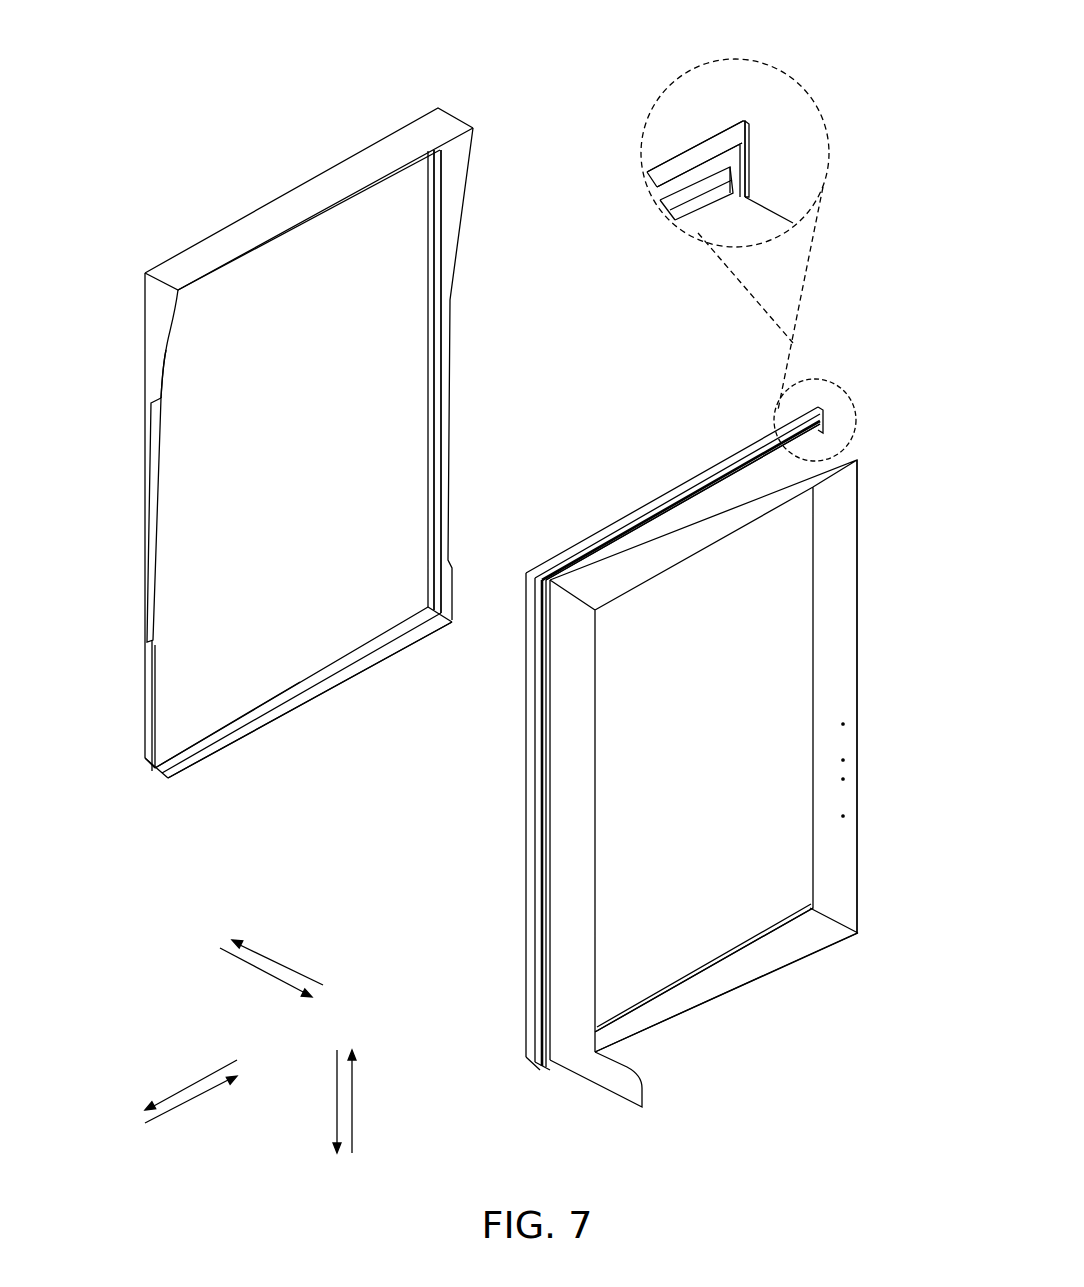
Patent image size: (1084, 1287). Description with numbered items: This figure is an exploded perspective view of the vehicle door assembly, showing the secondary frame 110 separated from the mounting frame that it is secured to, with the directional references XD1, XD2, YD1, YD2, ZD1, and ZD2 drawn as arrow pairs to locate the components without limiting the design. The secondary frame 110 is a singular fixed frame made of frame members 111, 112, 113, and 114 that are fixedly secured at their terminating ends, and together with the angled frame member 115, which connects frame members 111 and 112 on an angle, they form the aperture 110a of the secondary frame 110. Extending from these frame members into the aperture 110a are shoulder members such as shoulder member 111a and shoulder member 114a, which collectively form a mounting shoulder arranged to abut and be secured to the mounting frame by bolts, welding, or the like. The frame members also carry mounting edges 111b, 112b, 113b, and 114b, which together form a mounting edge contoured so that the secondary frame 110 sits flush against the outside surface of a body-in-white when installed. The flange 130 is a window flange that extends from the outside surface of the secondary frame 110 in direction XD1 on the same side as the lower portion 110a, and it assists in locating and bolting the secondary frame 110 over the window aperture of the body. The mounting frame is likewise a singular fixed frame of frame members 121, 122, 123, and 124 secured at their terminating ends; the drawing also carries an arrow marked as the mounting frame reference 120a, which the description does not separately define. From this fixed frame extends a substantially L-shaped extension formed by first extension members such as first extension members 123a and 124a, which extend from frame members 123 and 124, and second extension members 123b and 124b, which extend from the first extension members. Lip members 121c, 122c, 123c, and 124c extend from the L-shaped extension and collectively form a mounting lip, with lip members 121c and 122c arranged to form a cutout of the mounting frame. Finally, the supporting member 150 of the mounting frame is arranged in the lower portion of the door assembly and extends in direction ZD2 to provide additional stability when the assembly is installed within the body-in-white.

The secondary frame 110 is at (319, 435).
The aperture 110a is at (407, 282).
The frame member 111 is at (297, 705).
The shoulder member 111a is at (217, 735).
The mounting edge 111b is at (337, 690).
The frame member 112 is at (145, 637).
The mounting edge 112b is at (178, 370).
The frame member 113 is at (327, 188).
The mounting edge 113b is at (383, 176).
The frame member 114 is at (450, 292).
The shoulder member 114a is at (436, 413).
The mounting edge 114b is at (451, 345).
The frame member 115 is at (153, 778).
The flange 130 is at (150, 490).
The rear chassis direction 120a is at (775, 885).
The frame member 121 is at (718, 995).
The lip member 121c is at (548, 1068).
The frame member 122 is at (568, 897).
The lip member 122c is at (527, 838).
The frame member 123 is at (713, 518).
The first extension member 123a is at (735, 225).
The second extension member 123b is at (665, 198).
The lip member 123c is at (617, 517).
The frame member 124 is at (847, 577).
The first extension member 124a is at (745, 172).
The second extension member 124b is at (748, 170).
The lip member 124c is at (747, 177).
The supporting member 150 is at (625, 1092).
The direction XD1 is at (183, 1082).
The direction XD2 is at (200, 1100).
The direction YD1 is at (356, 1100).
The direction YD2 is at (334, 1095).
The direction ZD1 is at (278, 960).
The direction ZD2 is at (255, 972).